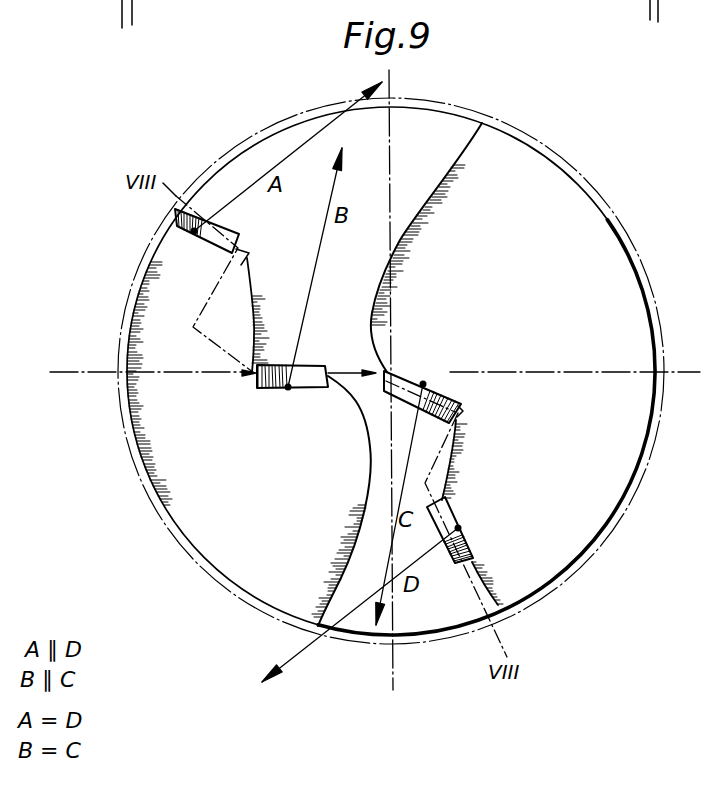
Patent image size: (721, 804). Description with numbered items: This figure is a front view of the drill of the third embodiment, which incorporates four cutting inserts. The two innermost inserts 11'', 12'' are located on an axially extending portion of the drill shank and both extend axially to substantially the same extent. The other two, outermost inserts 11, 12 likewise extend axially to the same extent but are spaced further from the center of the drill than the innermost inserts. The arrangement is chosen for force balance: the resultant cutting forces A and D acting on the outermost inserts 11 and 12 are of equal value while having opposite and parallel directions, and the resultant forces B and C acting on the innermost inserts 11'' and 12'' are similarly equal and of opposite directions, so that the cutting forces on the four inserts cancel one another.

The outermost cutting insert 11 is at (207, 243).
The innermost cutting insert 11'' is at (292, 401).
The outermost cutting insert 12 is at (470, 530).
The innermost cutting insert 12'' is at (429, 380).